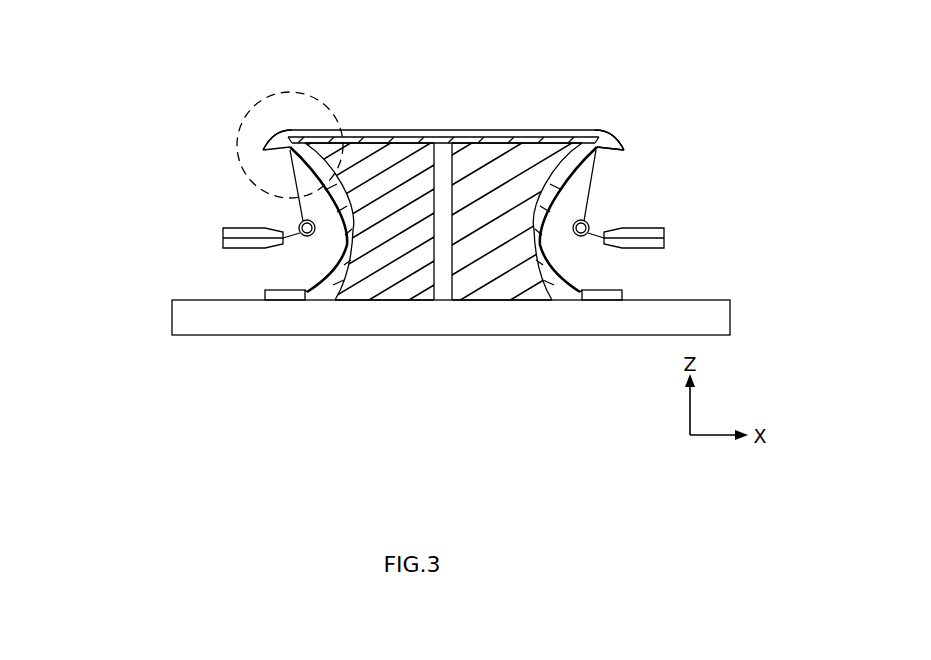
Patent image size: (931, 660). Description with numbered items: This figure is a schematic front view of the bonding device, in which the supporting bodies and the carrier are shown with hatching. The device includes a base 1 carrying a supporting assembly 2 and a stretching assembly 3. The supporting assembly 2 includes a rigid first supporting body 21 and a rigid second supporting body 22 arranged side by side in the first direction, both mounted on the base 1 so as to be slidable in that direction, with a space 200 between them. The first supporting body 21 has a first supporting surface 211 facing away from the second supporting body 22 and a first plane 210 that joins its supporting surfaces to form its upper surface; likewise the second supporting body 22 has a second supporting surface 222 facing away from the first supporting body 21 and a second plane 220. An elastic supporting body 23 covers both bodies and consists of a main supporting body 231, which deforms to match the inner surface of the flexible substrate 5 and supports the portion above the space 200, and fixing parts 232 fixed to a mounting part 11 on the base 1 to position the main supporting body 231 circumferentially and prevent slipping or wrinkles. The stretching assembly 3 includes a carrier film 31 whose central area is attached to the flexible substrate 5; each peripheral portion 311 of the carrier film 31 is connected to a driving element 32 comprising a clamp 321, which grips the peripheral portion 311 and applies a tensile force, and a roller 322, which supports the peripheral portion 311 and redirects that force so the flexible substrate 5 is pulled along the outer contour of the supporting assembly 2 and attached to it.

The base 1 is at (539, 322).
The mounting part 11 is at (285, 295).
The supporting assembly 2 is at (451, 323).
The first supporting body 21 is at (363, 290).
The second supporting body 22 is at (483, 294).
The elastic supporting body 23 is at (424, 154).
The space 200 is at (445, 163).
The first plane 210 is at (402, 143).
The first supporting surface 211 is at (300, 133).
The second plane 220 is at (502, 140).
The second supporting surface 222 is at (598, 135).
The main supporting body 231 is at (353, 140).
The fixing parts 232 is at (265, 289).
The stretching assembly 3 is at (413, 196).
The carrier film 31 is at (284, 177).
The peripheral portion 311 is at (594, 180).
The driving element 32 is at (429, 205).
The clamp 321 is at (222, 242).
The roller 322 is at (302, 222).
The flexible substrate 5 is at (634, 152).